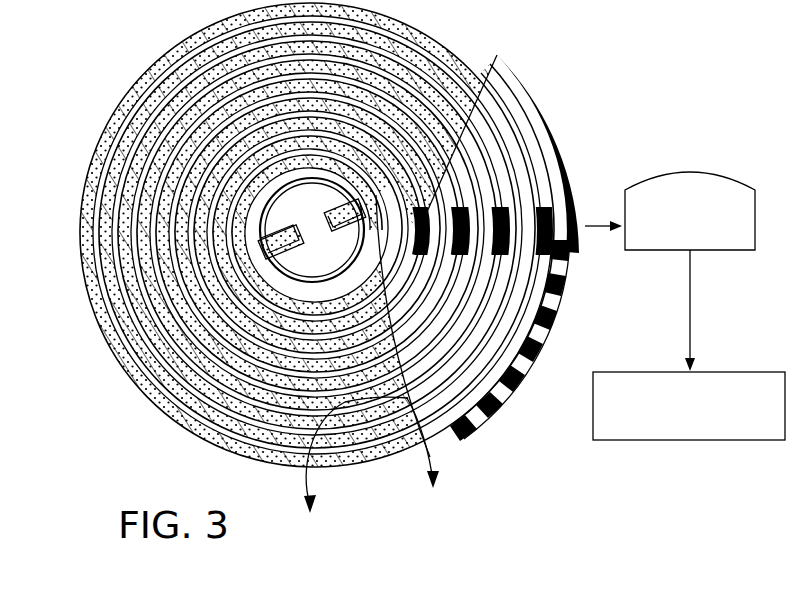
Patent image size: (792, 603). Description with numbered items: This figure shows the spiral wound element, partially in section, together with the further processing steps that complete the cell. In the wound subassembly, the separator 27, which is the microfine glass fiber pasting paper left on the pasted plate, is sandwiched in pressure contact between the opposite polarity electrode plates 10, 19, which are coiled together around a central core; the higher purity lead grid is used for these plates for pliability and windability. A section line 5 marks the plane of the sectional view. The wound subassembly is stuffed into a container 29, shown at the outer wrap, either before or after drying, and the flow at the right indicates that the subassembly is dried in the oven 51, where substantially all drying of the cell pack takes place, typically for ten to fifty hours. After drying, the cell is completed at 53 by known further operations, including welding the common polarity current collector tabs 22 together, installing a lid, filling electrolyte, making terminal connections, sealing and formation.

The electrode plate 10 is at (341, 236).
The opposite polarity plate 19 is at (185, 112).
The current collector tab 22 is at (512, 150).
The container 29 is at (548, 156).
The separator 27 is at (180, 332).
The section line 5- 5 is at (371, 471).
The oven 51 is at (688, 176).
The further processing step 53 is at (706, 372).